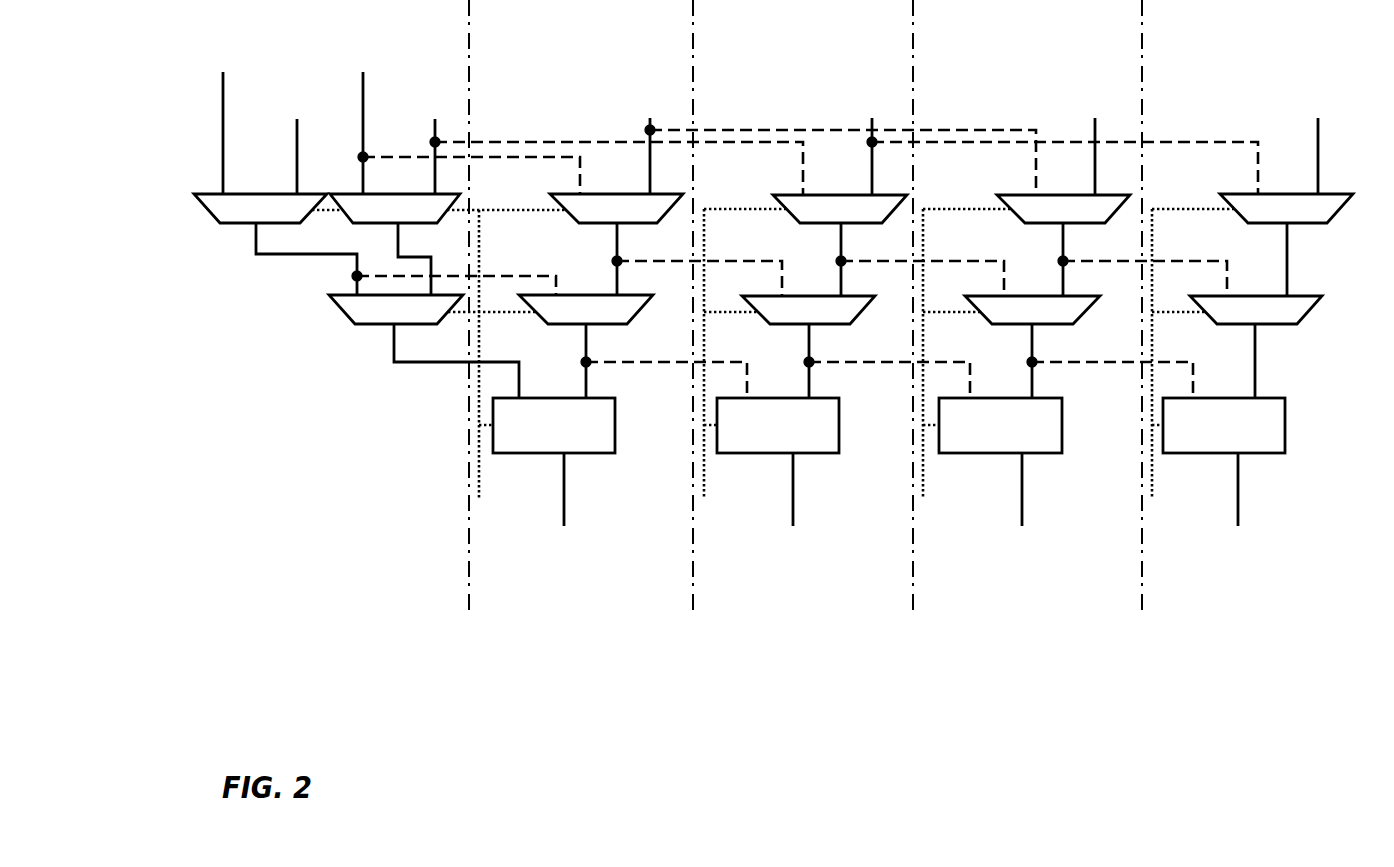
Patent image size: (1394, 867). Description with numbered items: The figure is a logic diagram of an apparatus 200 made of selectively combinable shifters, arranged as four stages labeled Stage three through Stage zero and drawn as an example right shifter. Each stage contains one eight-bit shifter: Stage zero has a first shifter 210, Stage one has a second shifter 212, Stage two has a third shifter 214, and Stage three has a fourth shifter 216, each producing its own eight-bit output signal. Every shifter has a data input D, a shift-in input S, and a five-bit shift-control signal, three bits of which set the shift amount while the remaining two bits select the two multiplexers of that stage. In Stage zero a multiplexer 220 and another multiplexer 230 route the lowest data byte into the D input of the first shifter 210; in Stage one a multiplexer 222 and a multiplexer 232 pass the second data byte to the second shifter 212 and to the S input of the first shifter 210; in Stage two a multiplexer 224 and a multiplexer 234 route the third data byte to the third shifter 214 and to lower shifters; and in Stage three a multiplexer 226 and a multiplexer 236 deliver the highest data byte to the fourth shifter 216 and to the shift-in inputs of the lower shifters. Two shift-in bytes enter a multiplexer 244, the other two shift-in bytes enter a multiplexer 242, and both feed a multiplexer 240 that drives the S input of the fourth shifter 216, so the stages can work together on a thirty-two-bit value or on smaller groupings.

The apparatus 200 is at (773, 394).
The first shifter 210 is at (1214, 450).
The second shifter 212 is at (990, 450).
The third shifter 214 is at (768, 450).
The fourth shifter 216 is at (544, 450).
The multiplexer 220 is at (1241, 321).
The multiplexer 222 is at (1018, 321).
The multiplexer 224 is at (795, 321).
The multiplexer 226 is at (572, 321).
The multiplexer 230 is at (1273, 220).
The multiplexer 232 is at (1049, 220).
The multiplexer 234 is at (827, 220).
The multiplexer 236 is at (603, 220).
The multiplexer 240 is at (380, 321).
The second multiplexer 242 is at (384, 220).
The first multiplexer 244 is at (242, 220).